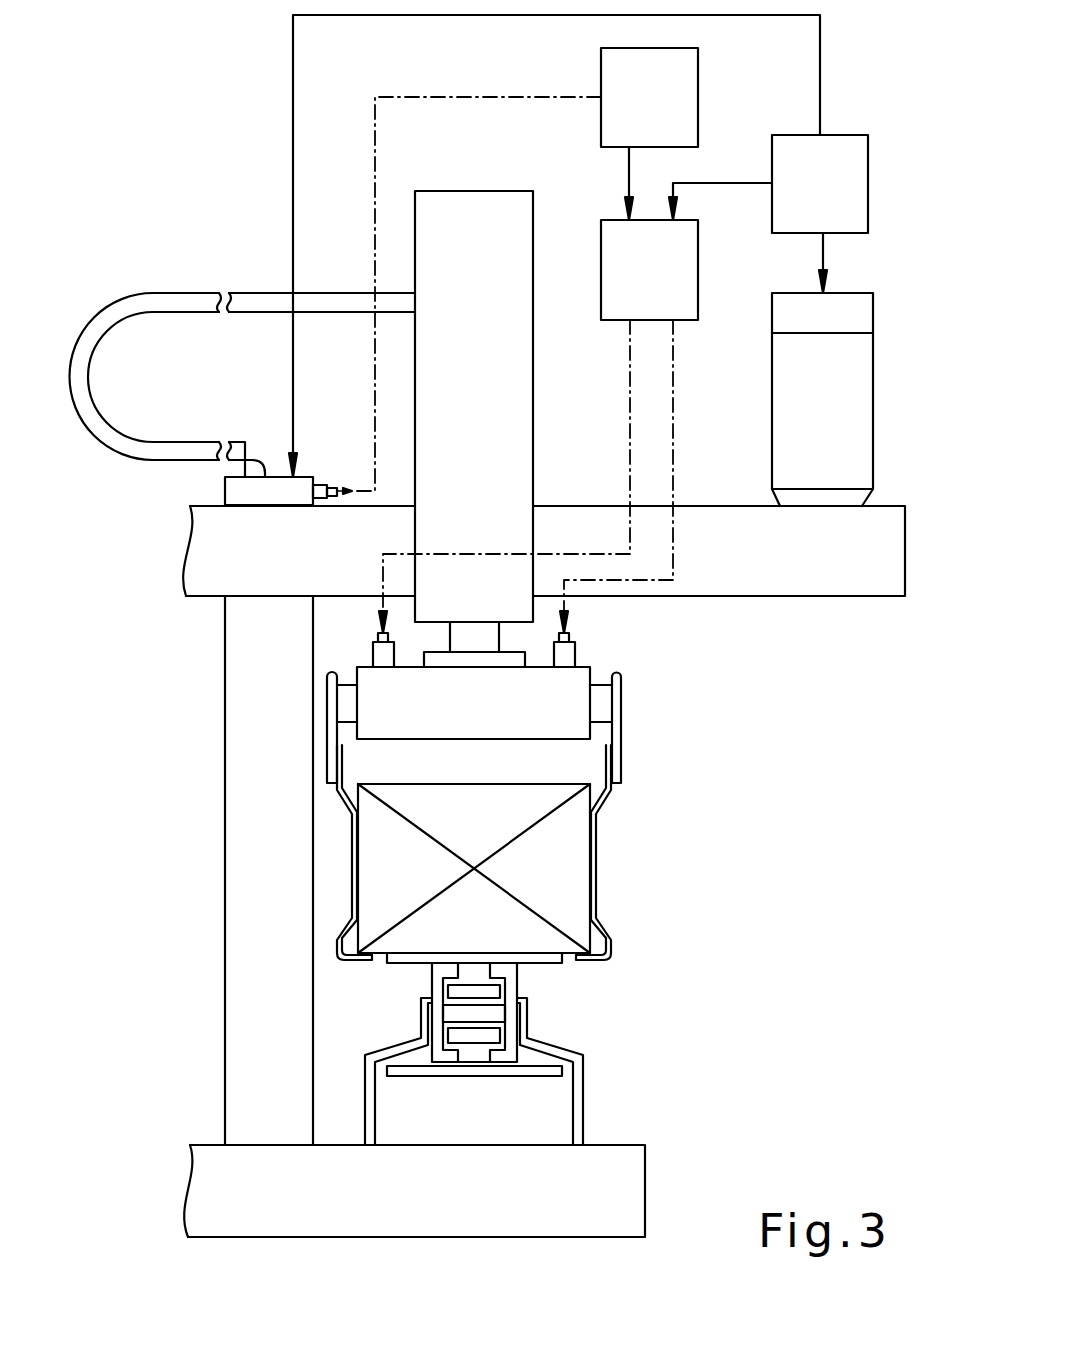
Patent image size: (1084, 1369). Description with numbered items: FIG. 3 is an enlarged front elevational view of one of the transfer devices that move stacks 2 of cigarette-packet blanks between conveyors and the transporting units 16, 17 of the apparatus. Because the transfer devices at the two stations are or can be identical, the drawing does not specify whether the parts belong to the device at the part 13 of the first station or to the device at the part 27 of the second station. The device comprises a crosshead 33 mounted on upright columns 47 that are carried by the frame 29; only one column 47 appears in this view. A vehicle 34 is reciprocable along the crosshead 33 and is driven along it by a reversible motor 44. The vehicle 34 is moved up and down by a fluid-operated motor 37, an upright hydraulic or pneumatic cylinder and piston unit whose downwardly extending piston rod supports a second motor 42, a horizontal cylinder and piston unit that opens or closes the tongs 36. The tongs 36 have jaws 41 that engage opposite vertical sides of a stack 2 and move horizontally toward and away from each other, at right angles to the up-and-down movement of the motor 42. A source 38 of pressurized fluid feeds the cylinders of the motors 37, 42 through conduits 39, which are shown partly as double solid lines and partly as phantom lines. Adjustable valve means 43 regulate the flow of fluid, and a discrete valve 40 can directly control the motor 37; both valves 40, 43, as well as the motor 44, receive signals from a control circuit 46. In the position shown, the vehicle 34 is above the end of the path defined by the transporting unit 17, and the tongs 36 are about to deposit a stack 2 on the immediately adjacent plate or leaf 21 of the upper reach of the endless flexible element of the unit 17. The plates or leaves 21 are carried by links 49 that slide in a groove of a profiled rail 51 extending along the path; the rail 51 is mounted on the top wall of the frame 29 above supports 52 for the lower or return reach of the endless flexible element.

The part of the first station 13 is at (478, 246).
The part of the second station 27 is at (201, 170).
The stack 2 is at (577, 848).
The transporting unit 16 is at (358, 1000).
The transporting unit 17 is at (414, 1060).
The plate or leaf 21 is at (550, 960).
The frame 29 is at (303, 1222).
The crosshead 33 is at (850, 582).
The vehicle 34 is at (386, 430).
The tongs 36 is at (615, 770).
The fluid-operated motor 37 is at (465, 205).
The source of pressurized fluid 38 is at (620, 128).
The conduits 39 is at (168, 305).
The valve 40 is at (284, 490).
The jaw 41 is at (353, 890).
The second motor 42 is at (562, 679).
The adjustable valve means 43 is at (688, 302).
The reversible motor 44 is at (853, 372).
The control circuit 46 is at (848, 158).
The upright column 47 is at (253, 812).
The link 49 is at (477, 977).
The profiled rail 51 is at (438, 975).
The support 52 is at (578, 1130).